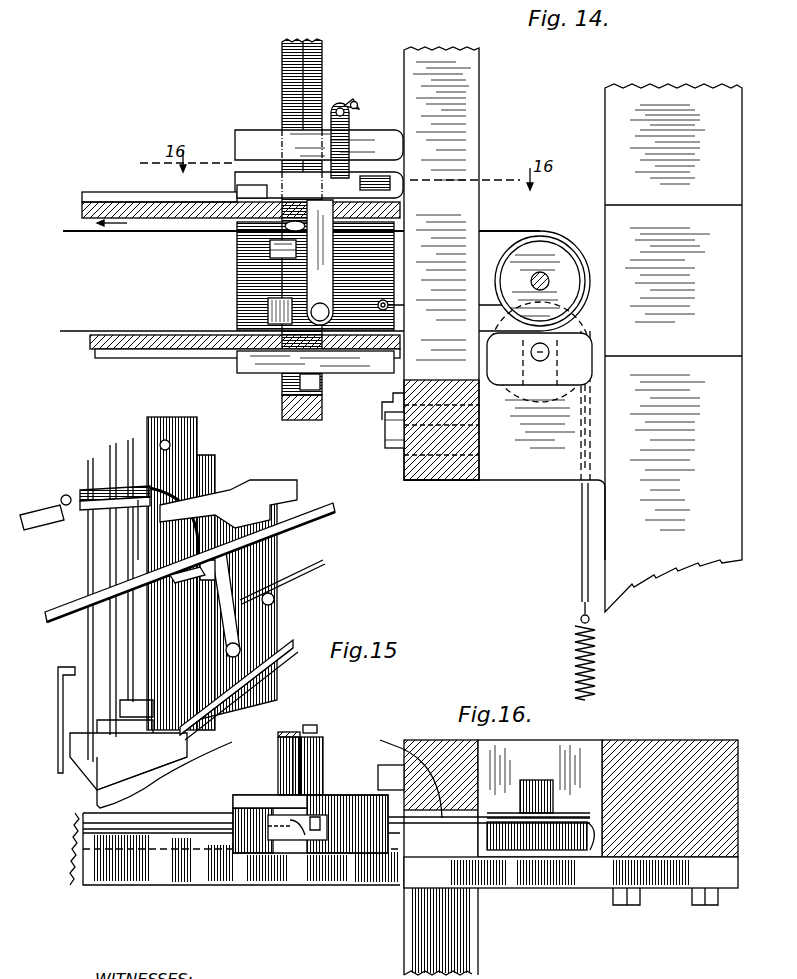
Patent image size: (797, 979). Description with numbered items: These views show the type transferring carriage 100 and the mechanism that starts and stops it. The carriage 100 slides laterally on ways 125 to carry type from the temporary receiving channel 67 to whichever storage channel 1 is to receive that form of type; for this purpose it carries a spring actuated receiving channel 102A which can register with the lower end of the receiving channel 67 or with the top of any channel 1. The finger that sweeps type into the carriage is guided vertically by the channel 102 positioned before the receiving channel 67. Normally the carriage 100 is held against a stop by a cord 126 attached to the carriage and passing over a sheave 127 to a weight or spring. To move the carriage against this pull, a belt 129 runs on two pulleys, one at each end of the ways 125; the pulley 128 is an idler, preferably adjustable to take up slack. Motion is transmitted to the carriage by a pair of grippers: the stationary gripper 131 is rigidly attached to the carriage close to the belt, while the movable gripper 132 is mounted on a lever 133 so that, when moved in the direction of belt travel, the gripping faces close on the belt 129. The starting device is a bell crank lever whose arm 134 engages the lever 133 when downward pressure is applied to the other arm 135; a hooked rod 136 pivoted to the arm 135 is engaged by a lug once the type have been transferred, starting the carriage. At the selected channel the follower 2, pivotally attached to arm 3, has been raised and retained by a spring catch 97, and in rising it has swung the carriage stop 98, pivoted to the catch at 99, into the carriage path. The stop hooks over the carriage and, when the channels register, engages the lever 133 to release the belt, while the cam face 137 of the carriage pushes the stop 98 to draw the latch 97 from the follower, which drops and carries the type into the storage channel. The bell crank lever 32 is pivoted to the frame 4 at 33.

In FIG. 15, the channel 1 is at (107, 733).
In FIG. 15, the follower 2 is at (75, 550).
In FIG. 15, the arm 3 is at (40, 518).
In FIG. 14, the frame 4 is at (627, 152).
In FIG. 16, the frame 4 is at (716, 817).
In FIG. 14, the bell crank lever 32 is at (470, 178).
In FIG. 16, the bell crank lever 32 is at (441, 857).
In FIG. 14, the pivot 33 is at (384, 438).
In FIG. 16, the pivot 33 is at (382, 778).
In FIG. 14, the temporary receiving channel 67 is at (312, 83).
In FIG. 15, the spring catch 97 is at (150, 528).
In FIG. 15, the carriage stop 98 is at (188, 498).
In FIG. 15, the pivot 99 is at (202, 455).
In FIG. 14, the carriage 100 is at (242, 266).
In FIG. 15, the carriage 100 is at (260, 617).
In FIG. 16, the carriage 100 is at (348, 808).
In FIG. 14, the channel 102 is at (282, 105).
In FIG. 16, the channel 102 is at (309, 725).
In FIG. 15, the receiving channel 102A is at (190, 495).
In FIG. 16, the receiving channel 102A is at (310, 760).
In FIG. 14, the ways 125 is at (152, 200).
In FIG. 16, the ways 125 is at (193, 822).
In FIG. 14, the cord 126 is at (418, 302).
In FIG. 15, the cord 126 is at (297, 580).
In FIG. 16, the cord 126 is at (394, 776).
In FIG. 14, the sheave 127 is at (539, 375).
In FIG. 16, the sheave 127 is at (567, 777).
In FIG. 14, the pulley 128 is at (550, 252).
In FIG. 16, the pulley 128 is at (568, 850).
In FIG. 14, the belt 129 is at (490, 231).
In FIG. 15, the belt 129 is at (302, 517).
In FIG. 16, the belt 129 is at (489, 833).
In FIG. 14, the stationary gripper 131 is at (268, 242).
In FIG. 15, the stationary gripper 131 is at (276, 598).
In FIG. 16, the stationary gripper 131 is at (272, 840).
In FIG. 14, the movable gripper 132 is at (290, 224).
In FIG. 15, the movable gripper 132 is at (257, 560).
In FIG. 16, the movable gripper 132 is at (307, 817).
In FIG. 14, the lever 133 is at (320, 279).
In FIG. 15, the lever 133 is at (217, 540).
In FIG. 16, the lever 133 is at (318, 824).
In FIG. 14, the arm 134 is at (344, 145).
In FIG. 14, the arm 135 is at (352, 99).
In FIG. 14, the hooked rod 136 is at (350, 186).
In FIG. 15, the cam face 137 is at (218, 507).
In FIG. 16, the cam face 137 is at (307, 800).